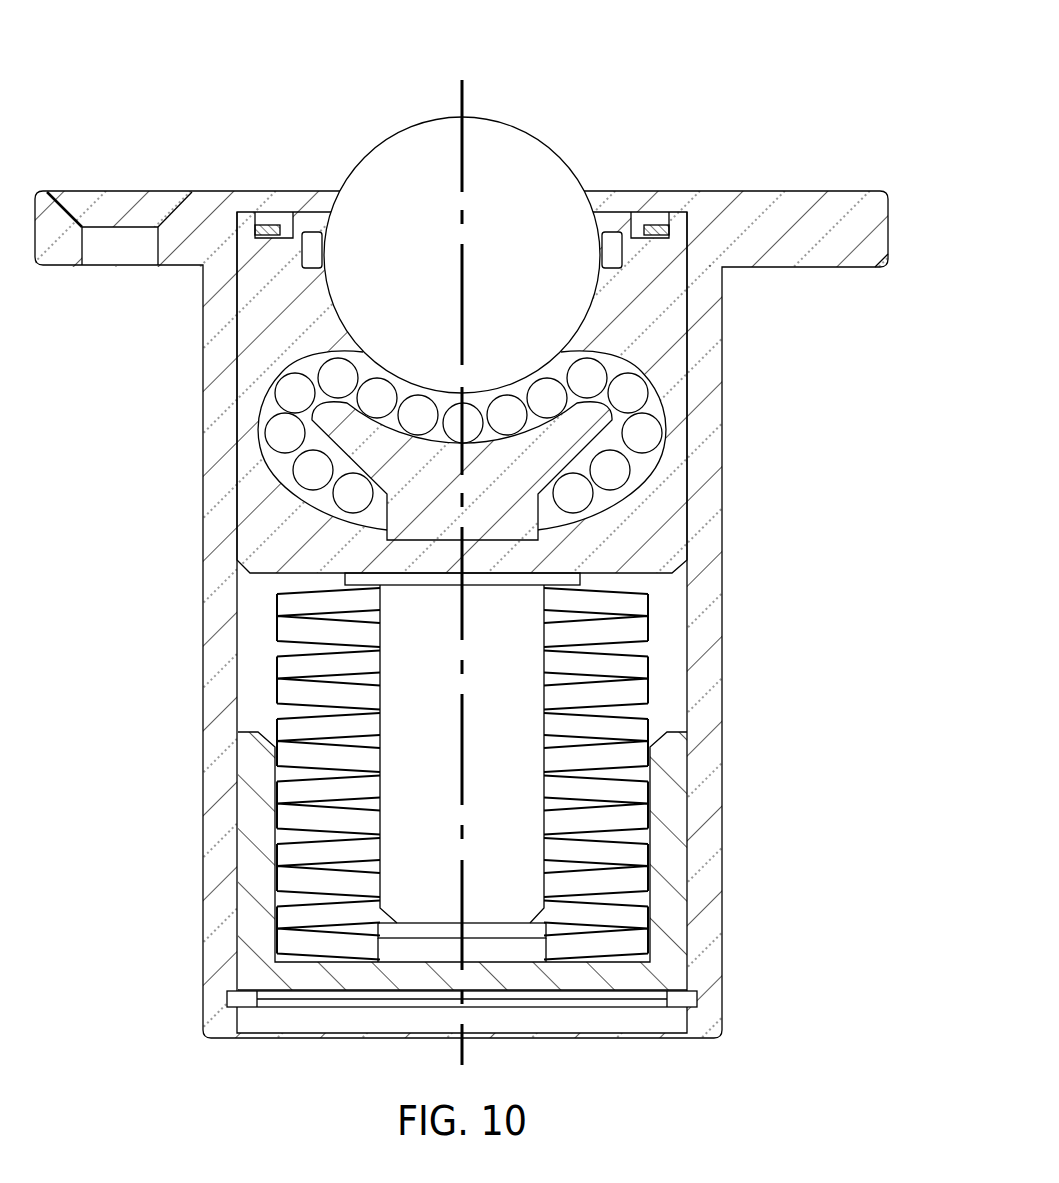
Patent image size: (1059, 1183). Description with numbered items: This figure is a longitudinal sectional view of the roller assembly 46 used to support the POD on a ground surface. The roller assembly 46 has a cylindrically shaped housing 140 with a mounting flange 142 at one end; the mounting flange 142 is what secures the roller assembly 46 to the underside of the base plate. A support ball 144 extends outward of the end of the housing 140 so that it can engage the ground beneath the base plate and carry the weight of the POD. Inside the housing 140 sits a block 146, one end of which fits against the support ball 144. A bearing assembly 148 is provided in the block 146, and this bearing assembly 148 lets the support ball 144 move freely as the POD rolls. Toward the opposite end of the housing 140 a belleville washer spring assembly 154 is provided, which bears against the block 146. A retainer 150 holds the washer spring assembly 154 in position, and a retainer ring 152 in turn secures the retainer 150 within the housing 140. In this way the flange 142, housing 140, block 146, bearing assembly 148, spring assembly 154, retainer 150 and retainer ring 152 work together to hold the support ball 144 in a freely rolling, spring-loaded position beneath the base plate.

The roller assembly 46 is at (688, 68).
The housing 140 is at (712, 688).
The mounting flange 142 is at (790, 200).
The support ball 144 is at (418, 273).
The block 146 is at (245, 342).
The bearing assembly 148 is at (388, 383).
The retainer 150 is at (558, 983).
The retainer ring 152 is at (680, 1007).
The washer spring assembly 154 is at (560, 807).